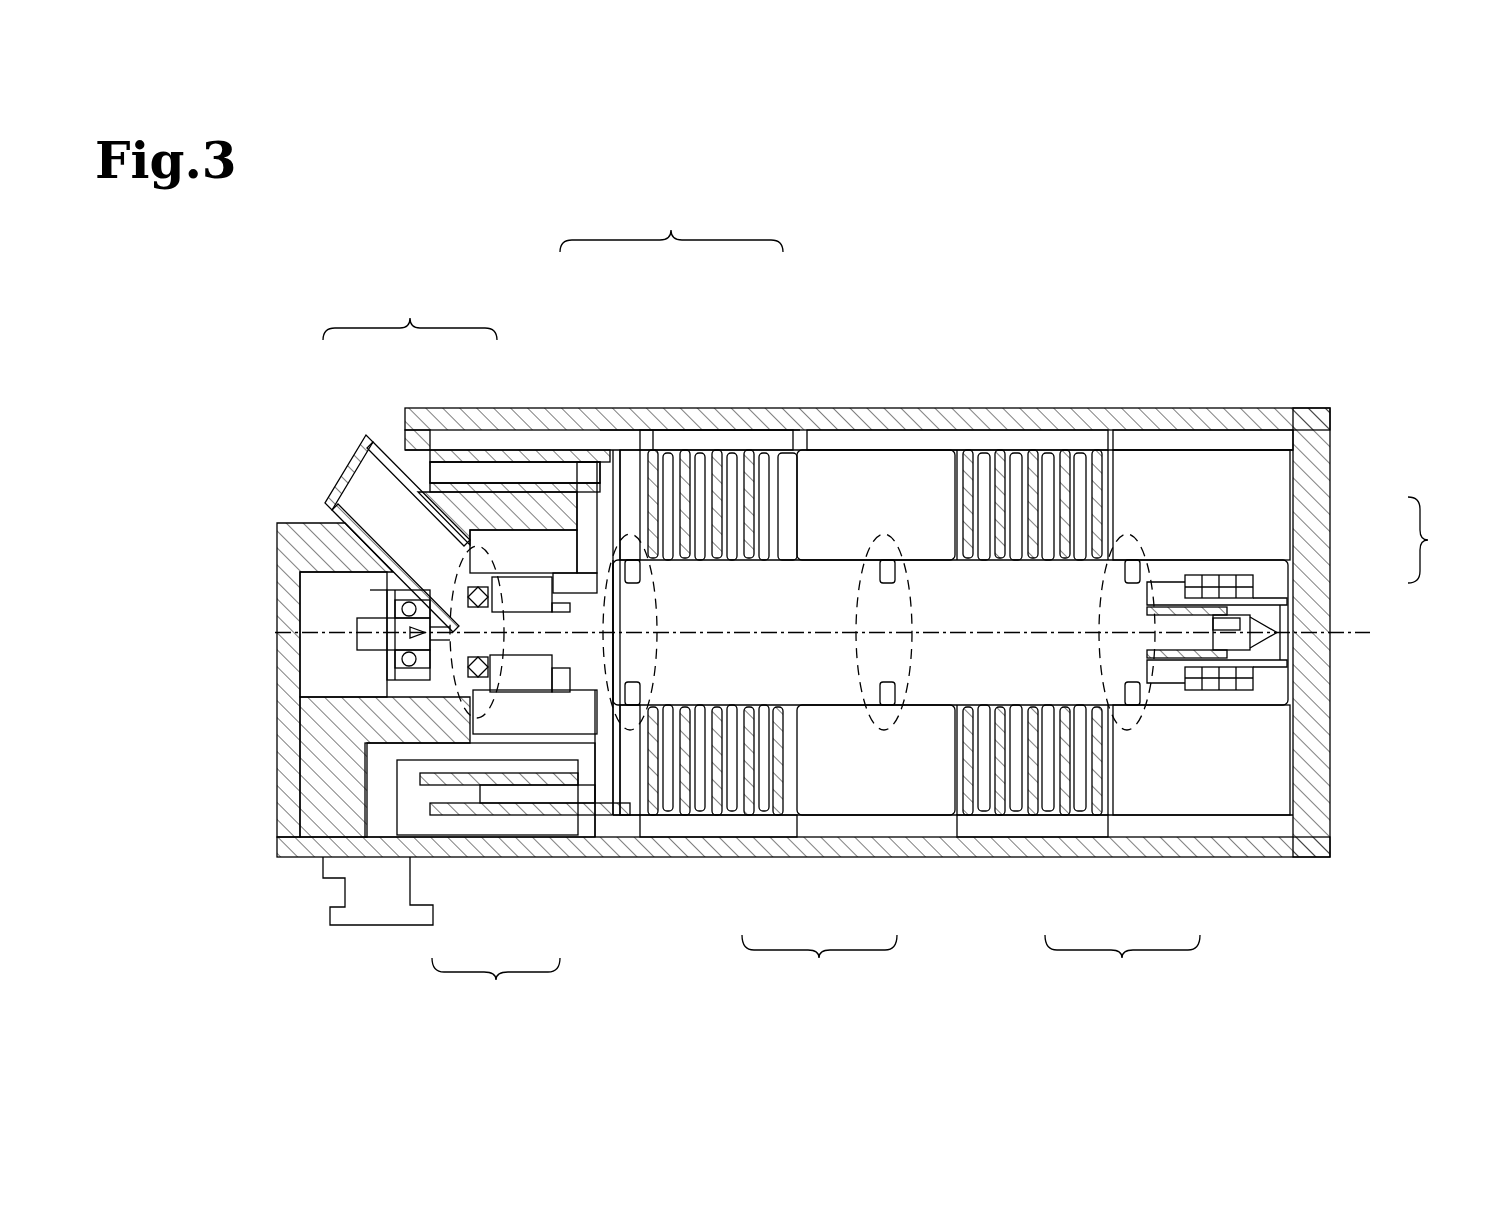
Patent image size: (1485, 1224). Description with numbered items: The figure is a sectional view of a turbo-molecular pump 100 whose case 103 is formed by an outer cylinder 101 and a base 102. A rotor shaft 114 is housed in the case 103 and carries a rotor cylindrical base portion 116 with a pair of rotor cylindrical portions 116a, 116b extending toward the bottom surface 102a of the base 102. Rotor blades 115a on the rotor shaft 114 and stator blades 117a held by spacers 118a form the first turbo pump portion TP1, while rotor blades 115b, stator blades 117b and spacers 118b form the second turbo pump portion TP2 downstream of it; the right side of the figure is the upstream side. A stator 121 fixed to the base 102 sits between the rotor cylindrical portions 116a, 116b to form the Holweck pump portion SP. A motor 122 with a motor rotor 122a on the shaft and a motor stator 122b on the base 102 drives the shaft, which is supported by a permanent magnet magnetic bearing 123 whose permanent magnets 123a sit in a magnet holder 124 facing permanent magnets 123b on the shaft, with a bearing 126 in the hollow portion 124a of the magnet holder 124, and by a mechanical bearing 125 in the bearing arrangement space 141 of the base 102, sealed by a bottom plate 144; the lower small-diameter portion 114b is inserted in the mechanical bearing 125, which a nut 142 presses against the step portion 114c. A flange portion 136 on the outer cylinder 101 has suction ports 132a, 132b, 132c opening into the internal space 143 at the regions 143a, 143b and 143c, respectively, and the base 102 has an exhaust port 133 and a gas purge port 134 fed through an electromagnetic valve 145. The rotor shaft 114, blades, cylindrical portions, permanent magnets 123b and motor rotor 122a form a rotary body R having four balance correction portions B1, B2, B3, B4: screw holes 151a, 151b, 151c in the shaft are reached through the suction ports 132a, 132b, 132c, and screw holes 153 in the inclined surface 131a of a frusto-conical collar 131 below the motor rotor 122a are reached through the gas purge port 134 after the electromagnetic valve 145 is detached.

The turbo-molecular pump 100 is at (325, 255).
The outer cylinder 101 is at (712, 420).
The base 102 is at (505, 507).
The bottom surface 102a is at (345, 760).
The case 103 is at (671, 225).
The rotor shaft 114 is at (833, 592).
The lower small-diameter portion 114b is at (393, 625).
The step portion 114c is at (476, 670).
The rotor blades 115a is at (1092, 785).
The rotor blades 115b is at (777, 783).
The rotor cylindrical base portion 116 is at (609, 775).
The rotor cylindrical portion 116a is at (503, 486).
The rotor cylindrical portion 116b is at (466, 457).
The stator blades 117a is at (1075, 798).
The stator blades 117b is at (760, 798).
The spacers 118a is at (1058, 825).
The spacers 118b is at (745, 825).
The stator 121 is at (450, 470).
The motor 122 is at (480, 879).
The motor rotor 122a is at (532, 690).
The motor stator 122b is at (517, 722).
The permanent magnet magnetic bearing 123 is at (1440, 540).
The permanent magnets 123a is at (1242, 592).
The permanent magnets 123b is at (1243, 578).
The magnet holder 124 is at (1252, 640).
The hollow portion 124a is at (1217, 612).
The mechanical bearing 125 is at (408, 663).
The bearing 126 is at (1228, 647).
The collar 131 is at (485, 680).
The inclined surface 131a is at (480, 676).
The suction port 132a is at (1122, 418).
The suction port 132b is at (863, 415).
The suction port 132c is at (633, 415).
The exhaust port 133 is at (375, 807).
The gas purge port 134 is at (407, 532).
The flange portion 136 is at (1283, 419).
The bearing arrangement space 141 is at (310, 647).
The nut 142 is at (380, 657).
The internal space 143 is at (875, 775).
The internal space 143a is at (1142, 506).
The internal space 143b is at (878, 507).
The internal space 143c is at (623, 485).
The bottom plate 144 is at (292, 570).
The electromagnetic valve 145 is at (352, 487).
The screw holes 151a is at (1133, 560).
The screw holes 151b is at (885, 563).
The screw holes 151c is at (628, 560).
The screw holes 153 is at (476, 676).
The Holweck pump portion SP is at (410, 312).
The first turbo pump portion TP1 is at (1122, 965).
The second turbo pump portion TP2 is at (819, 964).
The first balance correction portion B1 is at (1137, 718).
The second balance correction portion B2 is at (885, 727).
The third balance correction portion B3 is at (638, 718).
The fourth balance correction portion B4 is at (450, 675).
The rotary body R is at (1175, 560).